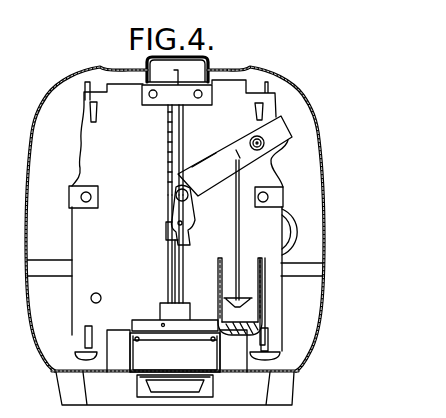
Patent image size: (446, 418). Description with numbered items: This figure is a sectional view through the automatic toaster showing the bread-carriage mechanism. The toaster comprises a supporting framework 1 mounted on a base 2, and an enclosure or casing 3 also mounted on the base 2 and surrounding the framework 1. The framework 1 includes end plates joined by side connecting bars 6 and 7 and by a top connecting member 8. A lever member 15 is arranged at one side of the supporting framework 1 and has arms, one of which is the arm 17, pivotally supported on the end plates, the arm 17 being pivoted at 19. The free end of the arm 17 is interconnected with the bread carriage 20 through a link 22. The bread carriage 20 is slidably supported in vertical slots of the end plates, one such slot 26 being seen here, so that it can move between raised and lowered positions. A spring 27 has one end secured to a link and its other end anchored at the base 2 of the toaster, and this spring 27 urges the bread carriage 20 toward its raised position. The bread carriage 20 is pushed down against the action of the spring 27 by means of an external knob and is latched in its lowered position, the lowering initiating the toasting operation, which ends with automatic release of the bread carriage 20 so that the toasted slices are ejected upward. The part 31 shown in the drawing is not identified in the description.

The supporting framework 1 is at (130, 168).
The base 2 is at (298, 390).
The casing 3 is at (322, 183).
The side connecting bar 6 is at (283, 198).
The side connecting bar 7 is at (69, 200).
The top connecting member 8 is at (207, 101).
The pivoted lever member 15 is at (278, 127).
The arm 17 is at (208, 173).
The pivot 19 is at (261, 147).
The bread carriage 20 is at (176, 280).
The link 22 is at (177, 209).
The vertical slot 26 is at (168, 123).
The spring 27 is at (298, 236).
The box 31 is at (131, 352).